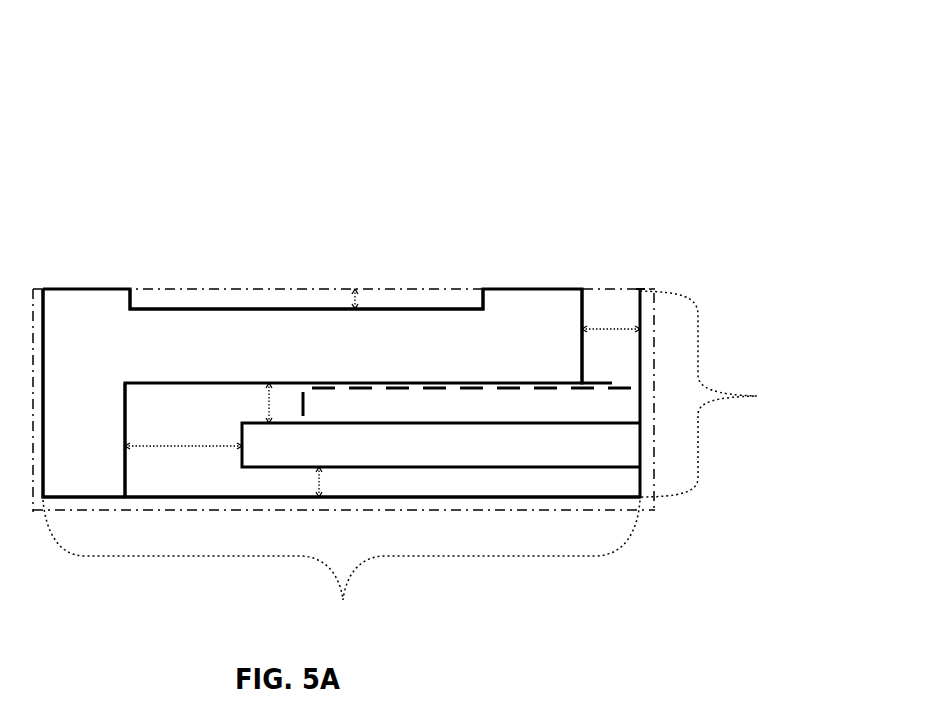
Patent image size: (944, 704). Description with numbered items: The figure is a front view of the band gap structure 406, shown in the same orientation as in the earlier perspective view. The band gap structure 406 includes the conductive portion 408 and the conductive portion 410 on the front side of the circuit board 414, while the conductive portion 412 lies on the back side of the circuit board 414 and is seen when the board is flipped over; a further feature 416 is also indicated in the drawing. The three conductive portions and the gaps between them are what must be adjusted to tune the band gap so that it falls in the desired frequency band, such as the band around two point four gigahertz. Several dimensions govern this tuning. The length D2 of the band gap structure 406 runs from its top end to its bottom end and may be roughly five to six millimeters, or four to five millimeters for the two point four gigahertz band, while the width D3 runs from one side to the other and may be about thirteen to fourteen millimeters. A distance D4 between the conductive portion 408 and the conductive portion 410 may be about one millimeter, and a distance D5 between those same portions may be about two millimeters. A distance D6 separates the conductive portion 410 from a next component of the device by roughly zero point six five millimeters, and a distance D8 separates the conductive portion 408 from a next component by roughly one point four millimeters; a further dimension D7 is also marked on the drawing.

The band gap structure 406 is at (783, 33).
The conductive portion 408 is at (249, 308).
The conductive portion 410 is at (242, 433).
The conductive portion 412 is at (588, 378).
The circuit board 414 is at (184, 490).
The side wall 416 is at (147, 413).
The length of the band gap structure D2 is at (758, 394).
The width of the band gap structure D3 is at (343, 603).
The distance between conductive portions D4 is at (268, 416).
The distance between conductive portions D5 is at (177, 448).
The distance to next component D6 is at (318, 483).
The recess depth dimension D7 is at (355, 296).
The distance to next component D8 is at (586, 332).